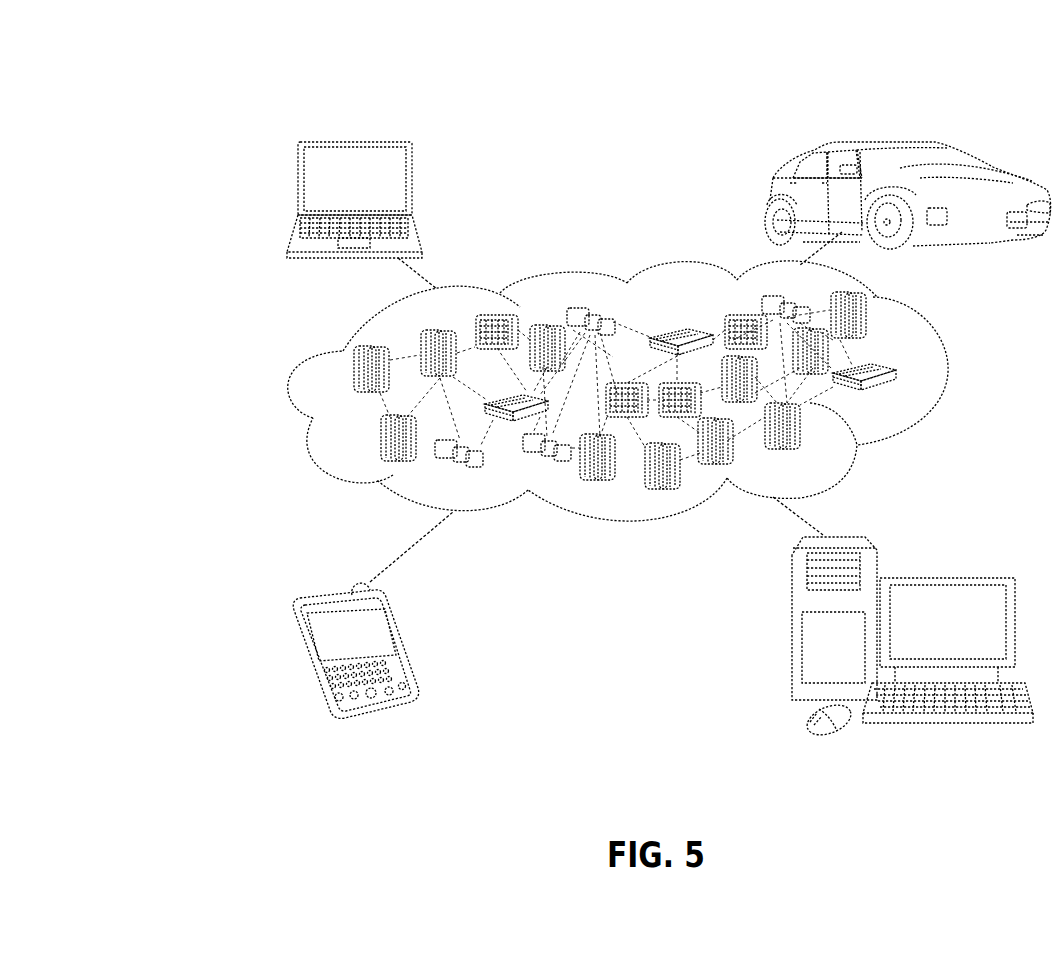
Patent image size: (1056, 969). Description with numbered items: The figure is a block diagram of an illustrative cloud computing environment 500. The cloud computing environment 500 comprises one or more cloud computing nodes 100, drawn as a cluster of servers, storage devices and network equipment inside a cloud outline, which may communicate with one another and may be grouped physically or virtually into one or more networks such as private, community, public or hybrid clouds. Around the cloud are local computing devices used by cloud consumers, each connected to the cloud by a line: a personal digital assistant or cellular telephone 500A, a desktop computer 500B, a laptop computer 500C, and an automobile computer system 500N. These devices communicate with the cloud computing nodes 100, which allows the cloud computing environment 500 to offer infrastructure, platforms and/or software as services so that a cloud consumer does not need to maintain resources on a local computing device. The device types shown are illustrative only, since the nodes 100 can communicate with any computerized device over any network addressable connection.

The cloud computing environment 500 is at (234, 60).
The cloud computing nodes 100 is at (912, 400).
The personal digital assistant (PDA) or cellular telephone 500A is at (403, 640).
The desktop computer 500B is at (945, 577).
The laptop computer 500C is at (413, 182).
The automobile computer system 500N is at (765, 198).